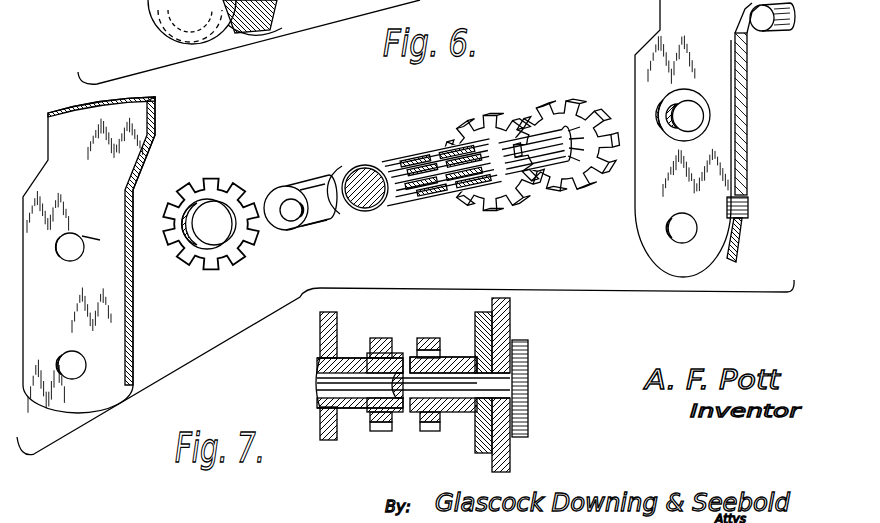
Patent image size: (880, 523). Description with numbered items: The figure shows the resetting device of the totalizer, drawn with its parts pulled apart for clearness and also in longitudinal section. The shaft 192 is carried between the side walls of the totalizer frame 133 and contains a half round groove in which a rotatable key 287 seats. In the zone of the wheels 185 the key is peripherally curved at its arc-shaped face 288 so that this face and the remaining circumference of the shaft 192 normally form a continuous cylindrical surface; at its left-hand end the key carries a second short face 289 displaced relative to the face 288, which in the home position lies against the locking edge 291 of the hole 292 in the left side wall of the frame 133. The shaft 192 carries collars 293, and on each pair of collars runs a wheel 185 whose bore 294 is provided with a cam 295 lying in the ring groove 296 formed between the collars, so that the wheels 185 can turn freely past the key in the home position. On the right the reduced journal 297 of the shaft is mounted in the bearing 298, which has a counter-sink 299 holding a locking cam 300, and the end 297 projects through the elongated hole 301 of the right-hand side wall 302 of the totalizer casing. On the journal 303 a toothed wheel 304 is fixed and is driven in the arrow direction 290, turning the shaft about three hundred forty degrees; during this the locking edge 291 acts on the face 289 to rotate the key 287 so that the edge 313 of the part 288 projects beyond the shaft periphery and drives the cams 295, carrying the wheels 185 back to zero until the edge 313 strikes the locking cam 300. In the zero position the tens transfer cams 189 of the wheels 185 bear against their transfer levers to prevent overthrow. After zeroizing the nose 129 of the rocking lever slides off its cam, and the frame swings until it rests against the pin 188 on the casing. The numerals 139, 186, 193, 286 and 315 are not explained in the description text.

In FIG. 6, the nose 129 is at (150, 3).
In FIG. 6, the wheel element (adjacent figure) 139 is at (277, 13).
In FIG. 6, the totalizer frame 133 is at (102, 378).
In FIG. 6, the wheel 185 is at (200, 180).
In FIG. 7, the key 186 is at (432, 430).
In FIG. 6, the pin 188 is at (745, 20).
In FIG. 6, the tens transfer cam 189 is at (218, 180).
In FIG. 7, the tens transfer cam 189 is at (418, 338).
In FIG. 6, the shaft 192 is at (367, 190).
In FIG. 6, the right bracket plate 193 is at (643, 208).
In FIG. 7, the right bracket plate 193 is at (512, 322).
In FIG. 6, the spline 286 is at (457, 200).
In FIG. 6, the rotatable key 287 is at (373, 212).
In FIG. 7, the rotatable key 287 is at (353, 380).
In FIG. 7, the arc-shaped face 288 is at (355, 383).
In FIG. 6, the second short face 289 is at (317, 219).
In FIG. 7, the second short face 289 is at (345, 393).
In FIG. 6, the arrow direction 290 is at (340, 175).
In FIG. 6, the locking edge 291 is at (93, 242).
In FIG. 6, the hole 292 is at (72, 262).
In FIG. 6, the collar 293 is at (410, 155).
In FIG. 7, the collar 293 is at (385, 375).
In FIG. 6, the bore 294 is at (210, 250).
In FIG. 7, the bore 294 is at (328, 376).
In FIG. 6, the cam 295 is at (193, 270).
In FIG. 6, the ring groove 296 is at (447, 205).
In FIG. 7, the ring groove 296 is at (527, 433).
In FIG. 6, the reduced journal 297 is at (562, 103).
In FIG. 7, the reduced journal 297 is at (527, 380).
In FIG. 6, the bearing 298 is at (688, 113).
In FIG. 6, the counter-sink 299 is at (677, 140).
In FIG. 7, the counter-sink 299 is at (528, 405).
In FIG. 6, the locking cam 300 is at (680, 97).
In FIG. 7, the locking cam 300 is at (475, 357).
In FIG. 7, the elongated hole 301 is at (528, 368).
In FIG. 7, the right-hand side wall 302 is at (512, 305).
In FIG. 7, the journal 303 is at (527, 392).
In FIG. 6, the toothed wheel 304 is at (575, 172).
In FIG. 7, the toothed wheel 304 is at (517, 423).
In FIG. 6, the edge 313 is at (417, 210).
In FIG. 7, the shaft bore 315 is at (343, 376).